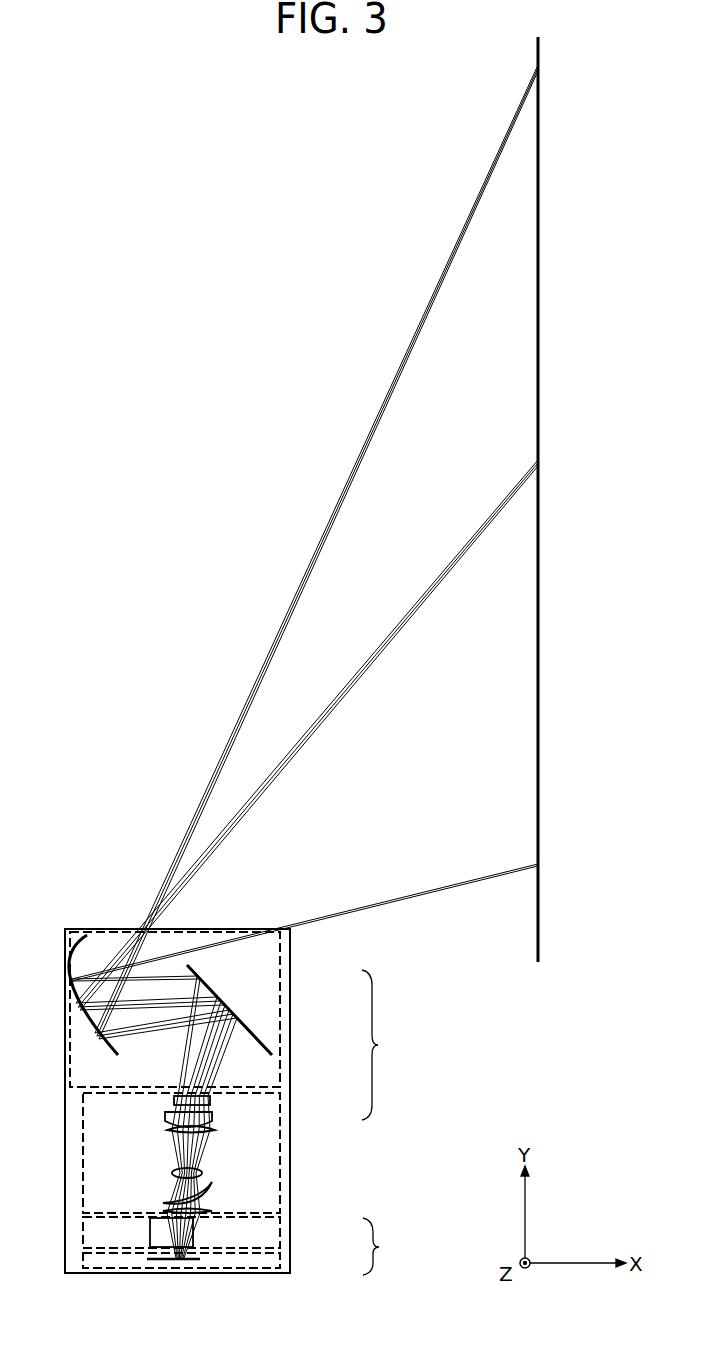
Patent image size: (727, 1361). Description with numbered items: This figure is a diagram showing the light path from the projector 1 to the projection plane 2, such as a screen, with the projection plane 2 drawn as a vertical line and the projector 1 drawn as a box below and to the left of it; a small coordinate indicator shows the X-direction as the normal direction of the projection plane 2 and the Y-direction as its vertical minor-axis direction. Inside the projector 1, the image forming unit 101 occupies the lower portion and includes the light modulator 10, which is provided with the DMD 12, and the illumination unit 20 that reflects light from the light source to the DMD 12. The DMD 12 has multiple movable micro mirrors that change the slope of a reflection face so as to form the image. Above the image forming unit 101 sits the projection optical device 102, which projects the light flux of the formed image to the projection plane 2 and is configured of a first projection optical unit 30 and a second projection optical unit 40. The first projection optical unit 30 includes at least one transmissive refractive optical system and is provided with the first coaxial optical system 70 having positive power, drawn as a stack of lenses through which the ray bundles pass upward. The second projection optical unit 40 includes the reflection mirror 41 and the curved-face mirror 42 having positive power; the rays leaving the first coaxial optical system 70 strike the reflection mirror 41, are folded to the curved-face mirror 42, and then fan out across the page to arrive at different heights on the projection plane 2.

The projector 1 is at (64, 922).
The projection plane 2 is at (536, 50).
The light modulator 10 is at (290, 1255).
The DMD 12 is at (157, 1262).
The illumination unit 20 is at (290, 1225).
The first projection optical unit 30 is at (290, 1105).
The second projection optical unit 40 is at (290, 975).
The reflection mirror 41 is at (280, 1035).
The curved-face mirror 42 is at (76, 1024).
The first coaxial optical system 70 is at (142, 1093).
The image forming unit 101 is at (392, 1246).
The projection optical device 102 is at (392, 1045).